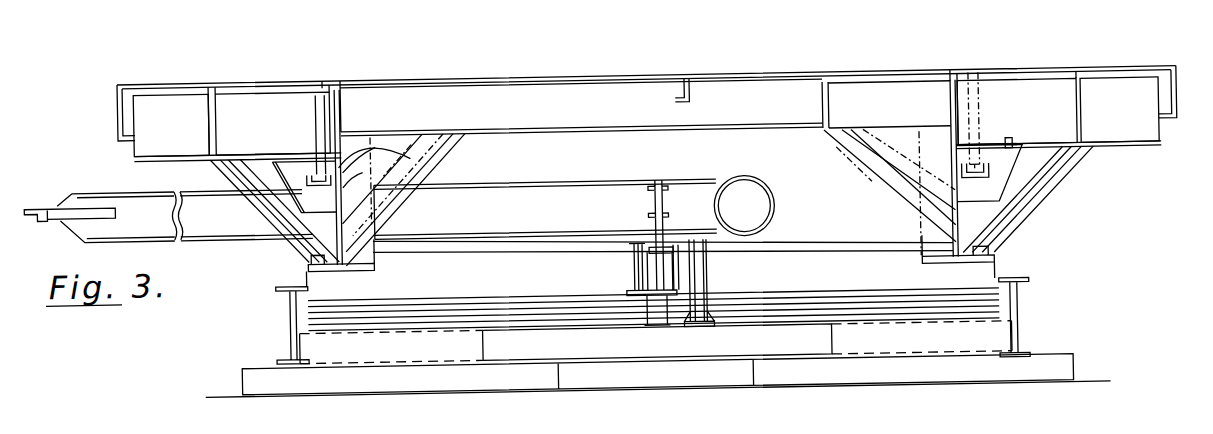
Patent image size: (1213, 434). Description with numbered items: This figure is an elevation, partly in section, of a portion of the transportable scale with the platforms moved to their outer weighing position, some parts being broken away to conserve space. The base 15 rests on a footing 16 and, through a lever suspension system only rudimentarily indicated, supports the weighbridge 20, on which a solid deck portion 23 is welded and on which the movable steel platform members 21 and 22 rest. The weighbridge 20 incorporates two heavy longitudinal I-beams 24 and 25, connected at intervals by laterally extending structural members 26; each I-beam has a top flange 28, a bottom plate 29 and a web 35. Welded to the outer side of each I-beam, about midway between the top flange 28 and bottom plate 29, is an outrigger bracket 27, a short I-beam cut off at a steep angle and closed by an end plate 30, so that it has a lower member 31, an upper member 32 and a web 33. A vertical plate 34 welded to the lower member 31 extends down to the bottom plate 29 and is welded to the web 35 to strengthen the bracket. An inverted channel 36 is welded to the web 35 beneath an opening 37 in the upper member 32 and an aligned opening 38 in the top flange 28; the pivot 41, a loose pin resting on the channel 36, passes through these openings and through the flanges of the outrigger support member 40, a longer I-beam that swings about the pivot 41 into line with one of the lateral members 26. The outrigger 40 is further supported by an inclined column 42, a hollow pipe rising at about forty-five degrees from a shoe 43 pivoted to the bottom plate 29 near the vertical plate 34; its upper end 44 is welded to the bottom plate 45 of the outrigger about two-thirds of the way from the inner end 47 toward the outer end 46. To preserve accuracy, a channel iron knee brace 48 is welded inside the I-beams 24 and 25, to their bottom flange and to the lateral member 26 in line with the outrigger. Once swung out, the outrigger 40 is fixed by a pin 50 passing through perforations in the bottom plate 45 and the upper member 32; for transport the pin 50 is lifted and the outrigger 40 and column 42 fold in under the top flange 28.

The base 15 is at (286, 341).
The footing 16 is at (243, 396).
The weighbridge 20 is at (916, 247).
The platform member 21 is at (330, 86).
The platform member 22 is at (992, 86).
The solid deck portion 23 is at (649, 85).
The I-beam 24 is at (344, 132).
The I-beam 25 is at (918, 150).
The laterally extending structural member 26 is at (626, 132).
The outrigger bracket 27 is at (1025, 184).
The top flange 28 is at (344, 87).
The bottom plate 29 is at (345, 275).
The end plate 30 is at (270, 176).
The lower member 31 is at (335, 208).
The upper member 32 is at (307, 175).
The web 33 is at (364, 172).
The vertical plate 34 is at (338, 247).
The web 35 is at (372, 153).
The inverted channel 36 is at (663, 174).
The opening 37 is at (975, 166).
The opening 38 is at (993, 59).
The outrigger support member 40 is at (129, 158).
The pivot 41 is at (314, 137).
The inclined column 42 is at (249, 207).
The shoe 43 is at (303, 268).
The upper end 44 is at (211, 159).
The bottom plate 45 is at (194, 156).
The outer end 46 is at (134, 142).
The inner end 47 is at (340, 111).
The knee brace 48 is at (435, 156).
The pin 50 is at (1010, 156).